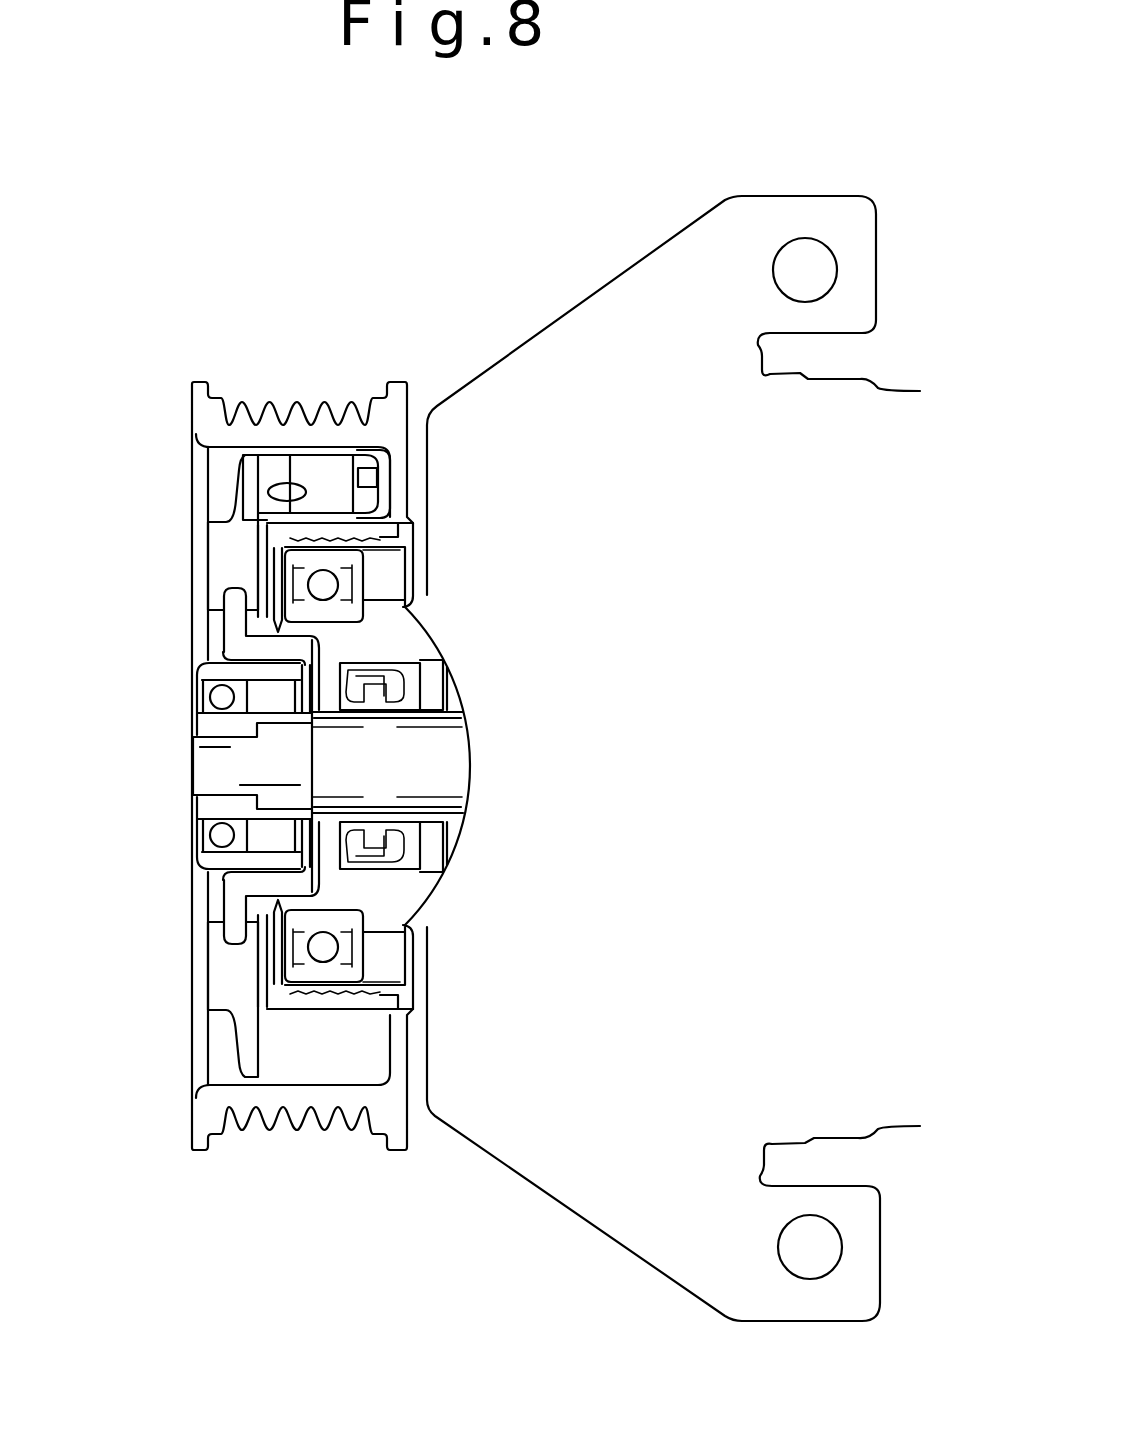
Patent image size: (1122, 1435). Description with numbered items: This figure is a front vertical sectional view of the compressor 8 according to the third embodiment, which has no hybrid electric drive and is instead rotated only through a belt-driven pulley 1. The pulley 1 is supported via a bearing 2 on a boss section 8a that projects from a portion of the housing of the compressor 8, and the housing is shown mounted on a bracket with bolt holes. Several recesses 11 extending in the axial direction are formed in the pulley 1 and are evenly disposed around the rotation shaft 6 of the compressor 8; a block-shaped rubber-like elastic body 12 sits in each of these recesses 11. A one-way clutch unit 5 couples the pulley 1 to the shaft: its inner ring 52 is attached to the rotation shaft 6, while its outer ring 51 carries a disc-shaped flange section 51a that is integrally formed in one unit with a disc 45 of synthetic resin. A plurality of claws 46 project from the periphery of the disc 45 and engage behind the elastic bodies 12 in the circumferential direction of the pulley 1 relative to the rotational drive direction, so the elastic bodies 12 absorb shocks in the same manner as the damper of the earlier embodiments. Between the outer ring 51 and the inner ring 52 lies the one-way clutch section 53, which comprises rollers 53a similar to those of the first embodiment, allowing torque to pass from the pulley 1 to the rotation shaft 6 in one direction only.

The pulley 1 is at (328, 1130).
The bearing 2 is at (323, 953).
The one-way clutch unit 5 is at (259, 774).
The rotation shaft 6 is at (222, 766).
The compressor 8 is at (583, 333).
The boss section 8a is at (405, 892).
The recesses 11 is at (328, 460).
The rubber-like elastic bodies 12 is at (318, 468).
The disc 45 is at (222, 540).
The claws 46 is at (277, 462).
The outer ring 51 is at (258, 853).
The flange section 51a is at (233, 937).
The inner ring 52 is at (205, 727).
The one-way clutch section 53 is at (262, 848).
The rollers 53a is at (268, 688).